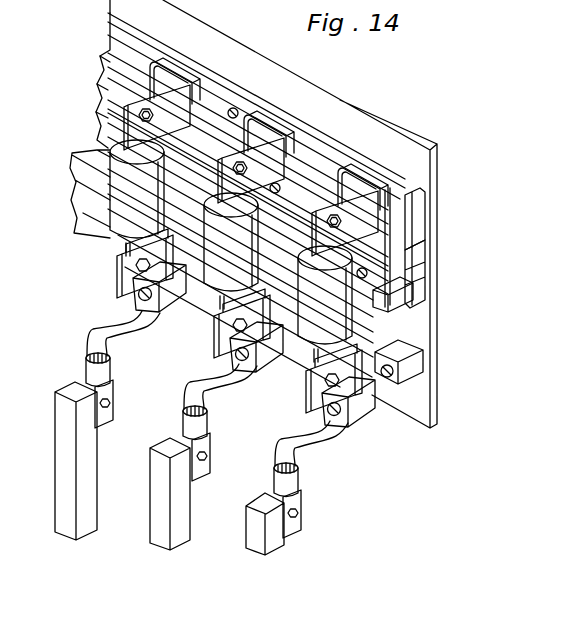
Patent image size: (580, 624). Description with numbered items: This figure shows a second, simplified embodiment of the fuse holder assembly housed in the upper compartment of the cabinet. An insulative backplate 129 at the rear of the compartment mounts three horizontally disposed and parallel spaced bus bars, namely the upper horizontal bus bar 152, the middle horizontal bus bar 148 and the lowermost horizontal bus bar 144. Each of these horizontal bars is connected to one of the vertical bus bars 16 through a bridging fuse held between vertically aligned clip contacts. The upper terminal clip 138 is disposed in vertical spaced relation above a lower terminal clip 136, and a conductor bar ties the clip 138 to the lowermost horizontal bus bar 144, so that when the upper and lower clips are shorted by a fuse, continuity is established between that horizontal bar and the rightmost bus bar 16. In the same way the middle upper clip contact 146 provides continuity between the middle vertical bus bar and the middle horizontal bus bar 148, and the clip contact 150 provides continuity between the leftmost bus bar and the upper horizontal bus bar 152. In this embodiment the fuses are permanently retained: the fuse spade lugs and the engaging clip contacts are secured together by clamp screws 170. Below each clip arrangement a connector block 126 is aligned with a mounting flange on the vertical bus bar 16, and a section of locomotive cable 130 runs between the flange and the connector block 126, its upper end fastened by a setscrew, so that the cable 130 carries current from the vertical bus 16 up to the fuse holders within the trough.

The bus bar 16 is at (273, 535).
The connector block 126 is at (352, 423).
The insulative backplate 129 is at (426, 350).
The locomotive cable 130 is at (297, 462).
The terminal clip 136 is at (117, 282).
The upper terminal clip 138 is at (355, 212).
The lowermost horizontal bus bar 144 is at (415, 303).
The middle upper clip contact 146 is at (263, 150).
The middle horizontal bus bar 148 is at (418, 258).
The clip contact 150 is at (110, 92).
The upper horizontal bus bar 152 is at (418, 208).
The clamp screw 170 is at (330, 225).